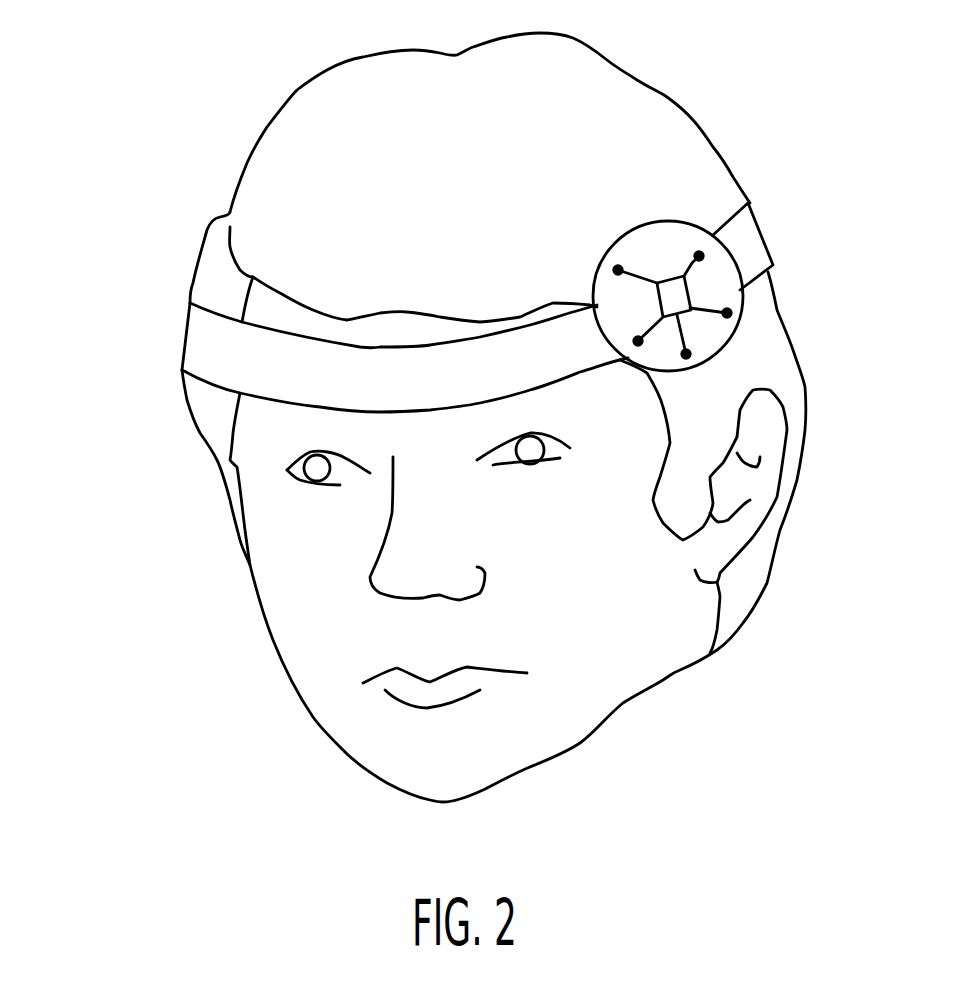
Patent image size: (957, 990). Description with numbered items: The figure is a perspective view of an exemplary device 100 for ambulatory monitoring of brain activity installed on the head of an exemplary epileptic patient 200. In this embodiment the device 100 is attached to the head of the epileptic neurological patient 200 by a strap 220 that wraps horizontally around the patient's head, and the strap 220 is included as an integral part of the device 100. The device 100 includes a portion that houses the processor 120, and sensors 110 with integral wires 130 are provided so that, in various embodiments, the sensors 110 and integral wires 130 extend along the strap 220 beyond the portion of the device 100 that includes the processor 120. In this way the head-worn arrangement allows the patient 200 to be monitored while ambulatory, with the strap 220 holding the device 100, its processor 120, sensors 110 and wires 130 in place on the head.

The device for ambulatory monitoring of brain activity 100 is at (628, 233).
The sensors 110 is at (690, 357).
The processor 120 is at (677, 298).
The integral wires 130 is at (637, 277).
The epileptic patient 200 is at (308, 90).
The strap 220 is at (197, 343).